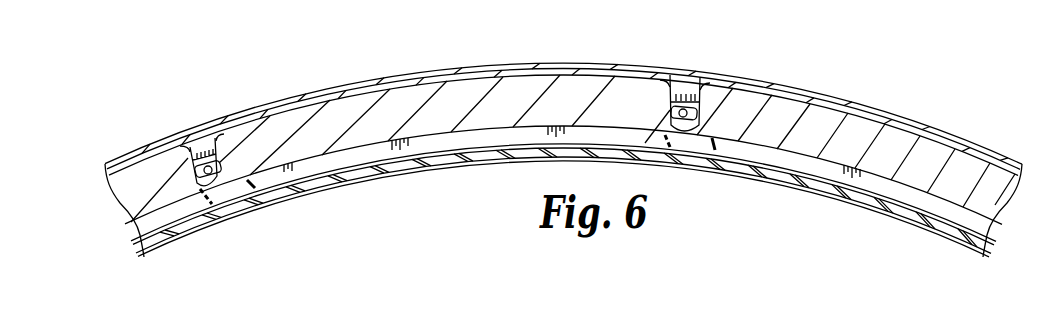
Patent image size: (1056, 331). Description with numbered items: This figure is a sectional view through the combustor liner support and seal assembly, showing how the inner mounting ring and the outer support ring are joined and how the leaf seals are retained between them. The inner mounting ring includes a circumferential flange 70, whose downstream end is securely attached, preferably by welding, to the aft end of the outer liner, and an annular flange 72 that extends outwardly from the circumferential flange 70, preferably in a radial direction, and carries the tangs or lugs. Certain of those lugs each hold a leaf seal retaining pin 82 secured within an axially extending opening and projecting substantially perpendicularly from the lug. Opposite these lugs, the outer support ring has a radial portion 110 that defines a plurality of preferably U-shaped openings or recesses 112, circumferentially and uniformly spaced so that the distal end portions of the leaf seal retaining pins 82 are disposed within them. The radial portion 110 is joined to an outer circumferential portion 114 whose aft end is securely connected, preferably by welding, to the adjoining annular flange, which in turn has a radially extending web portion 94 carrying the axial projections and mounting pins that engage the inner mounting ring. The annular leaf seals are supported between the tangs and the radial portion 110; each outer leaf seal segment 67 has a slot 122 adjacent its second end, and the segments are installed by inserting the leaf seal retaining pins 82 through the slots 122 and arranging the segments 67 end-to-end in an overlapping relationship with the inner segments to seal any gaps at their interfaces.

The radial portion 110 is at (138, 188).
The recess 112 is at (193, 130).
The outer circumferential portion 114 is at (303, 93).
The web portion 94 is at (399, 82).
The circumferential flange 70 is at (371, 180).
The annular flange 72 is at (437, 156).
The slot 122 is at (190, 163).
The outer leaf seal segment 67 is at (208, 152).
The leaf seal retaining pin 82 is at (210, 178).